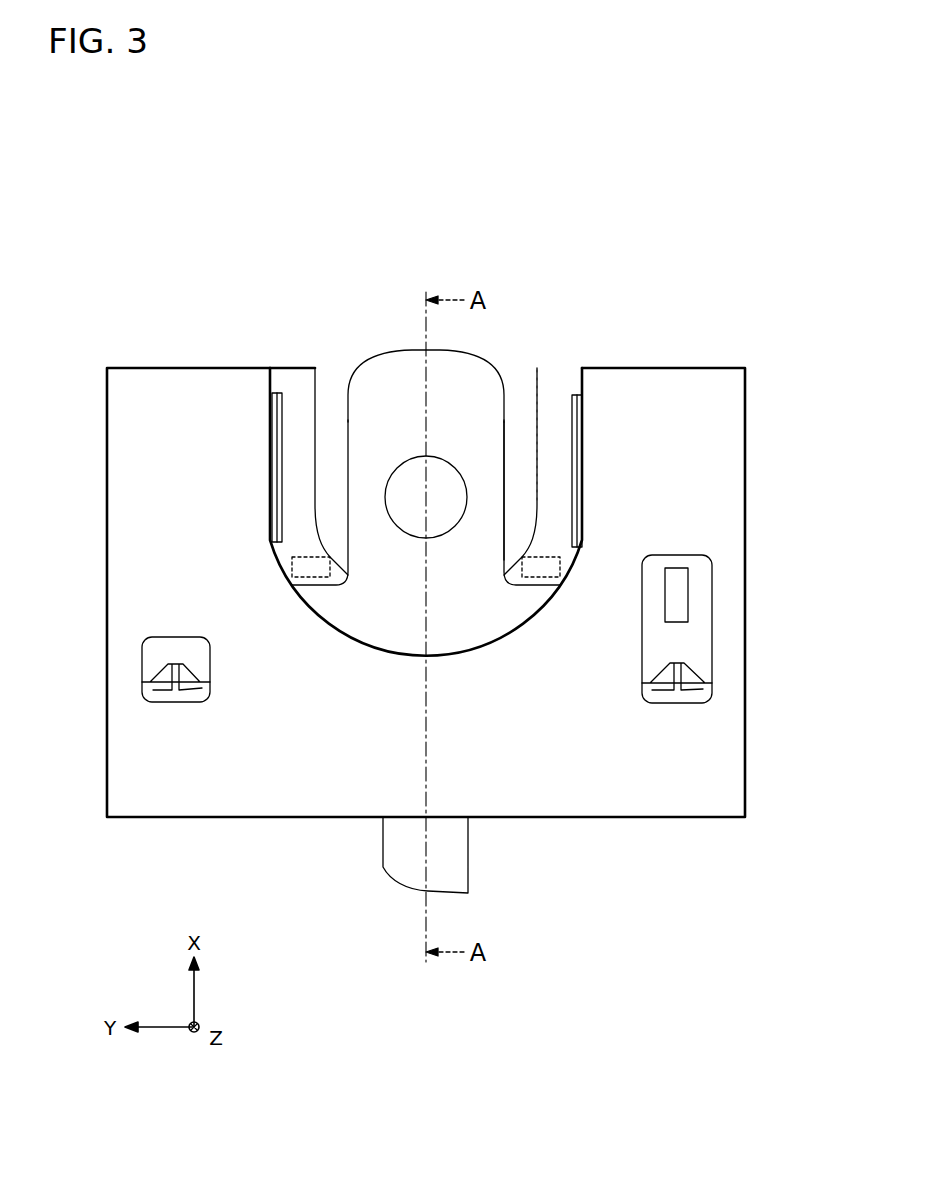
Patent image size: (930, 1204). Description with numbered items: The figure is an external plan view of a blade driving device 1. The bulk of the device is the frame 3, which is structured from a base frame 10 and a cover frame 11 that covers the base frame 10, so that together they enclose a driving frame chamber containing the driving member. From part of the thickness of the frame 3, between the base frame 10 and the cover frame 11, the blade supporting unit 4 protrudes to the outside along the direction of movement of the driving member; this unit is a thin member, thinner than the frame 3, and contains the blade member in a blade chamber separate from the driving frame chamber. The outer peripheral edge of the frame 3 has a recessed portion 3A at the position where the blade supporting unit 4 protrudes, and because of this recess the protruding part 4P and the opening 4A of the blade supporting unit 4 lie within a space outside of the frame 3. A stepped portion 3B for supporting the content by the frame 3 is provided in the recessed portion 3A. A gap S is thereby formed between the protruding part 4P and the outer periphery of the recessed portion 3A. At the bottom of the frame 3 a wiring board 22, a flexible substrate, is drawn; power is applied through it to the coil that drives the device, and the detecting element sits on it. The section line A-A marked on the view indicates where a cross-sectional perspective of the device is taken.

The blade driving device 1 is at (693, 283).
The frame 3 is at (752, 528).
The recessed portion 3A is at (320, 407).
The stepped portion 3B is at (268, 410).
The blade supporting unit 4 is at (539, 590).
The opening 4A is at (404, 487).
The protruding part 4P is at (503, 440).
The base frame 10 is at (292, 365).
The cover frame 11 is at (575, 390).
The wiring board 22 is at (468, 850).
The gap S is at (523, 455).